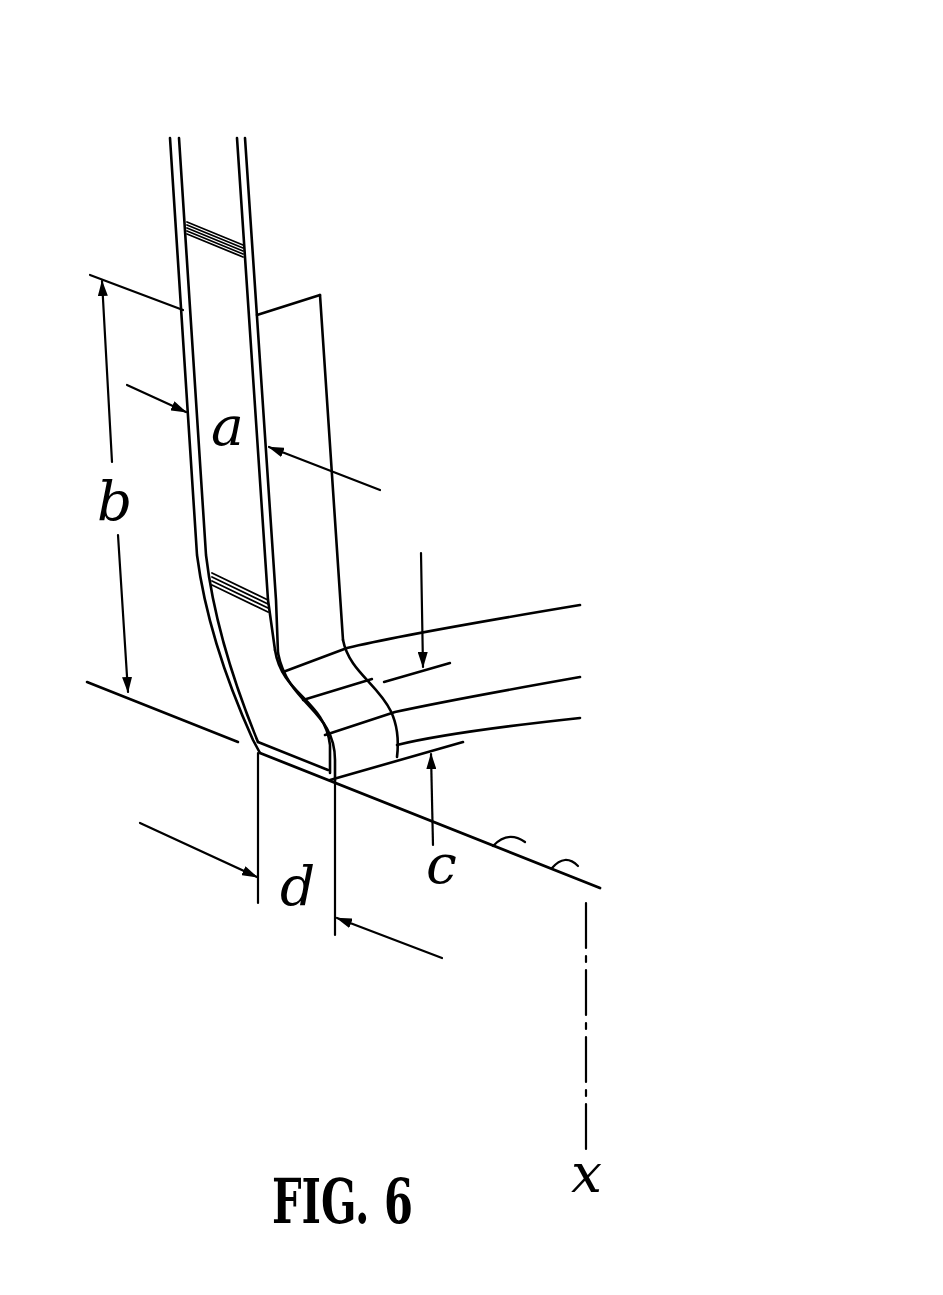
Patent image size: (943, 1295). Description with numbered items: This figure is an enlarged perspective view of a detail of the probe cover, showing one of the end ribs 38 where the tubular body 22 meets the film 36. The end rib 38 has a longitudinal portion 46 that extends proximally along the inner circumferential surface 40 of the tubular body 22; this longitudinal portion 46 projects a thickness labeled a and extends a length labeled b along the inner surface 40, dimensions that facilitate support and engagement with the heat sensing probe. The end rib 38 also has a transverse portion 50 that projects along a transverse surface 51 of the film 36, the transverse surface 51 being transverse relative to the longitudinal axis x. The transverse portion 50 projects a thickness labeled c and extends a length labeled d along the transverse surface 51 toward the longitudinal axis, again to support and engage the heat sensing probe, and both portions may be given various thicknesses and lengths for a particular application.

The tubular body 22 is at (255, 96).
The inner circumferential surface 40 is at (390, 305).
The longitudinal portion 46 is at (305, 428).
The end rib 38 is at (176, 731).
The transverse portion 50 is at (293, 722).
The film 36 is at (547, 867).
The transverse surface 51 is at (497, 845).